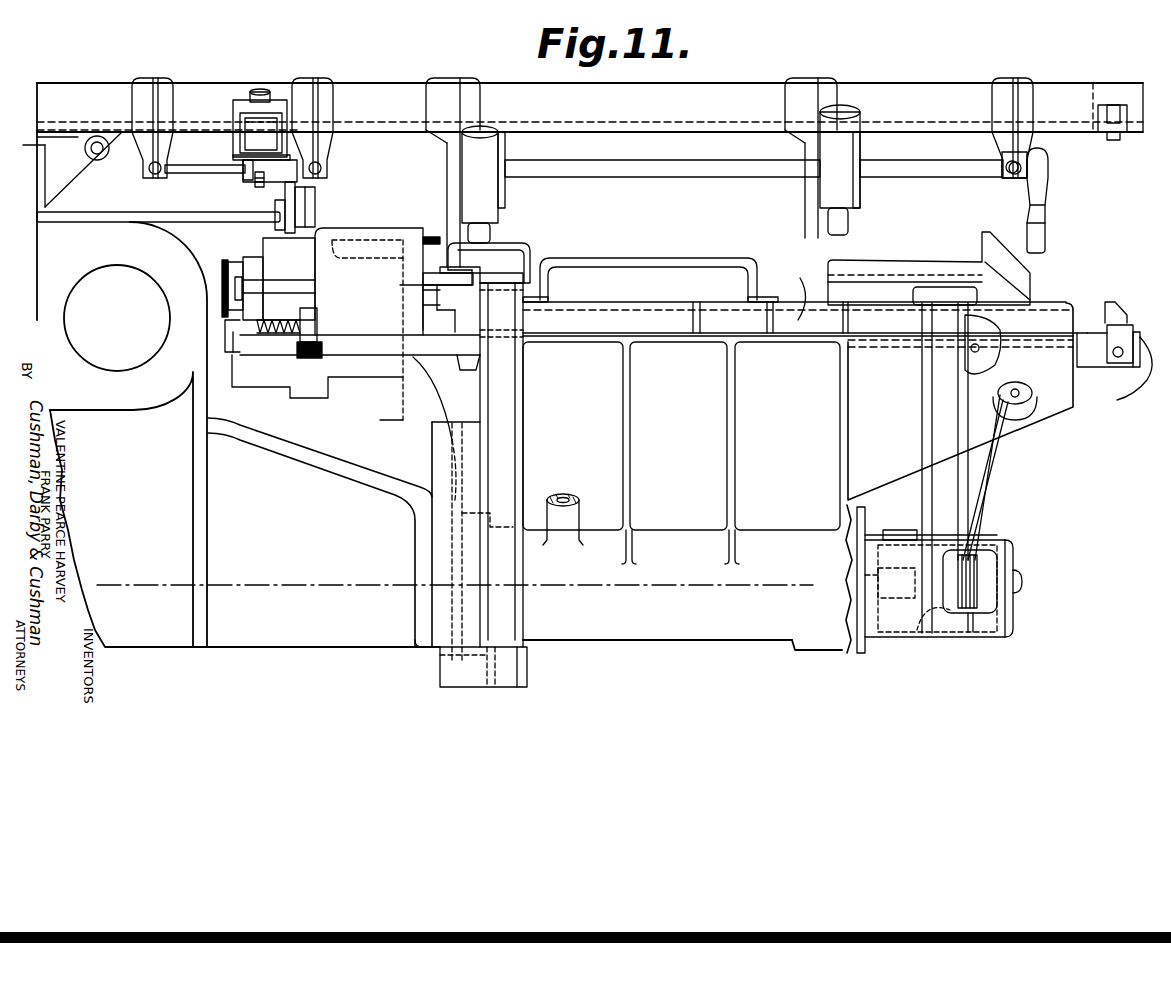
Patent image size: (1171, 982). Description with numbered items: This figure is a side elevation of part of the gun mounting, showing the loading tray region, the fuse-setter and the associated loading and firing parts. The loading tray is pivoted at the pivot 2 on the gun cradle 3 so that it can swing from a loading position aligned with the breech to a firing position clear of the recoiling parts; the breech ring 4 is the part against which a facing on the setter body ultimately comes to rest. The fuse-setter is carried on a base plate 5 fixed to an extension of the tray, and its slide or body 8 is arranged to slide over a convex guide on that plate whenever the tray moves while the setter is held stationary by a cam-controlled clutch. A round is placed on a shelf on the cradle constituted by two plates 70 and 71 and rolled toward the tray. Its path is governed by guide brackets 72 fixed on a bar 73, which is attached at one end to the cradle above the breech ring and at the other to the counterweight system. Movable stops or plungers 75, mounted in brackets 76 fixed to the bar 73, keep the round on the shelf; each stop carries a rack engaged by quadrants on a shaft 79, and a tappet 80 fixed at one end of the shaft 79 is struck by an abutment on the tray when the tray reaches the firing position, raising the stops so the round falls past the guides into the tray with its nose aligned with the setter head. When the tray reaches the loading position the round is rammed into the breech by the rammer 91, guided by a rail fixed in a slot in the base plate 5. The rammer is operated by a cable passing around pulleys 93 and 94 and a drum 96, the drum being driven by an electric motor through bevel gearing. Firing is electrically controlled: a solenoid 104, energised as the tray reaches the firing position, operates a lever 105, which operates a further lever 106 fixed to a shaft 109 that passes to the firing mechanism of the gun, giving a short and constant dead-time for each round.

The pivot 2 is at (695, 587).
The gun cradle 3 is at (327, 637).
The breech ring 4 is at (375, 417).
The base plate 5 is at (290, 345).
The slide or body 8 is at (375, 245).
The plate 70 is at (522, 258).
The plate 71 is at (942, 262).
The bracket 72 is at (452, 207).
The bar 73 is at (742, 92).
The movable stop or plunger 75 is at (490, 235).
The bracket 76 is at (483, 150).
The shaft 79 is at (938, 168).
The tappet 80 is at (1040, 200).
The rammer 91 is at (1108, 310).
The pulley 93 is at (1040, 392).
The pulley 94 is at (1124, 382).
The drum 96 is at (985, 565).
The solenoid 104 is at (258, 143).
The lever 105 is at (250, 180).
The lever 106 is at (283, 222).
The shaft 109 is at (157, 212).